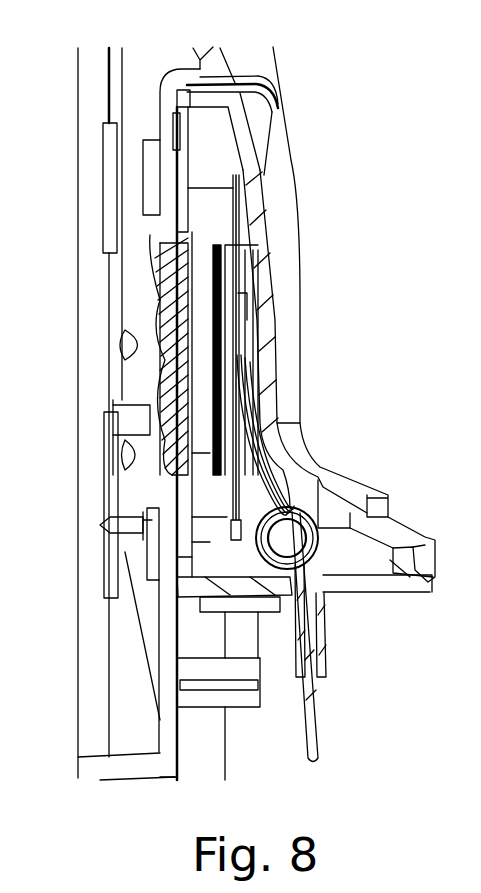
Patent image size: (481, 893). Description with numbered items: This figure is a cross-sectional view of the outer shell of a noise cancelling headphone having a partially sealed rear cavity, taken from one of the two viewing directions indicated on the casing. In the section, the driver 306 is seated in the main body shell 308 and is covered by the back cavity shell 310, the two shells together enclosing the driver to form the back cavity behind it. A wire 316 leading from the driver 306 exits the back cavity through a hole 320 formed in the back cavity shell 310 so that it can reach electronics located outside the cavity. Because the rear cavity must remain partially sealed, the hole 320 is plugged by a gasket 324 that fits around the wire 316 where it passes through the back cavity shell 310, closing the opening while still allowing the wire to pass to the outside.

The driver 306 is at (160, 310).
The main body shell 308 is at (217, 67).
The back cavity shell 310 is at (268, 290).
The wire 316 is at (318, 716).
The hole 320 is at (313, 588).
The gasket 324 is at (318, 632).